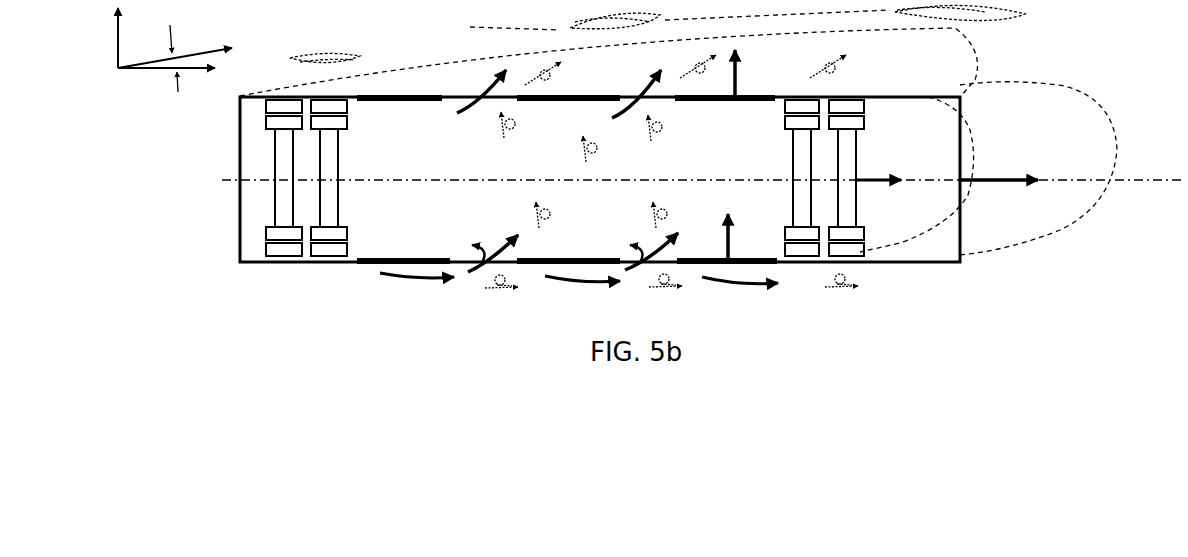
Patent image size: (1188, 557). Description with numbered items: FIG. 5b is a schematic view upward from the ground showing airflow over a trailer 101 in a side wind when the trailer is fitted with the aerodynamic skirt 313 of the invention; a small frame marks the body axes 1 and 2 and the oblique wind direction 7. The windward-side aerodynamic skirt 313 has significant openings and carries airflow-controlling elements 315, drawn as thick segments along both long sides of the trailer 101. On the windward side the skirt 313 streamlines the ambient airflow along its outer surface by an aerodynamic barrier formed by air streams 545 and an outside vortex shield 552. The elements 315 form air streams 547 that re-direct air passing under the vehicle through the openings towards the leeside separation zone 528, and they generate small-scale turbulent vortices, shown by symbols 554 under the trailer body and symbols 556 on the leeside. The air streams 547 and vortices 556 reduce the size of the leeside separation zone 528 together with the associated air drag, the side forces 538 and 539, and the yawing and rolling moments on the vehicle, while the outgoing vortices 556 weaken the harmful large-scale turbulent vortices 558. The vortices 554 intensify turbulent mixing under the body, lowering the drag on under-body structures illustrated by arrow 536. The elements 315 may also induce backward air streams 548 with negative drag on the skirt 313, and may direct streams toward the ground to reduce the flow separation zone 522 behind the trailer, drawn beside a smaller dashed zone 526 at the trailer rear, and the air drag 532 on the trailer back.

The body axis 1 is at (166, 86).
The body axis 2 is at (129, 35).
The flight direction axis 7 is at (175, 45).
The trailer 101 is at (213, 167).
The windward-side aerodynamic skirt 313 is at (443, 143).
The airflow-controlling elements 315 is at (708, 252).
The flow separation zone 522 is at (1030, 238).
The inner flow envelope 526 is at (972, 128).
The leeside separation zone 528 is at (985, 60).
The air drag 532 is at (999, 165).
The arrow 536 is at (879, 165).
The side force 538 is at (754, 233).
The side force 539 is at (761, 70).
The air streams 545 is at (420, 278).
The air streams 547 is at (500, 258).
The backward air streams 548 is at (465, 250).
The outside vortex shield 552 is at (493, 285).
The small-scale turbulent vortices 554 is at (597, 155).
The small-scale turbulent vortices 556 is at (558, 70).
The large-scale turbulent vortices 558 is at (335, 52).